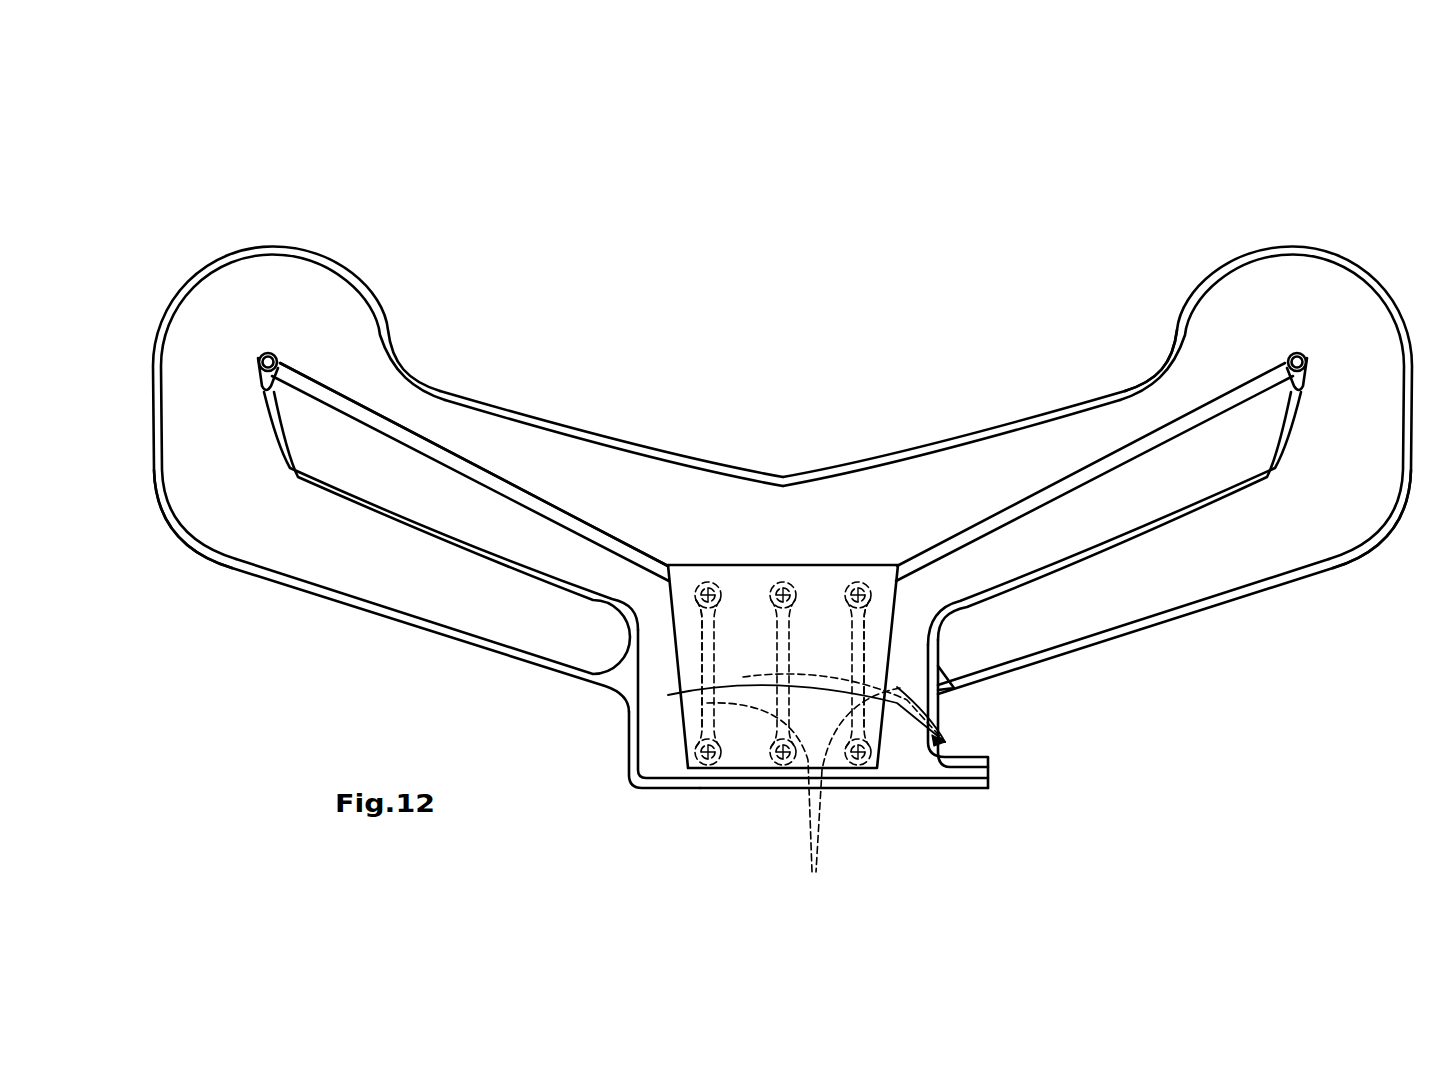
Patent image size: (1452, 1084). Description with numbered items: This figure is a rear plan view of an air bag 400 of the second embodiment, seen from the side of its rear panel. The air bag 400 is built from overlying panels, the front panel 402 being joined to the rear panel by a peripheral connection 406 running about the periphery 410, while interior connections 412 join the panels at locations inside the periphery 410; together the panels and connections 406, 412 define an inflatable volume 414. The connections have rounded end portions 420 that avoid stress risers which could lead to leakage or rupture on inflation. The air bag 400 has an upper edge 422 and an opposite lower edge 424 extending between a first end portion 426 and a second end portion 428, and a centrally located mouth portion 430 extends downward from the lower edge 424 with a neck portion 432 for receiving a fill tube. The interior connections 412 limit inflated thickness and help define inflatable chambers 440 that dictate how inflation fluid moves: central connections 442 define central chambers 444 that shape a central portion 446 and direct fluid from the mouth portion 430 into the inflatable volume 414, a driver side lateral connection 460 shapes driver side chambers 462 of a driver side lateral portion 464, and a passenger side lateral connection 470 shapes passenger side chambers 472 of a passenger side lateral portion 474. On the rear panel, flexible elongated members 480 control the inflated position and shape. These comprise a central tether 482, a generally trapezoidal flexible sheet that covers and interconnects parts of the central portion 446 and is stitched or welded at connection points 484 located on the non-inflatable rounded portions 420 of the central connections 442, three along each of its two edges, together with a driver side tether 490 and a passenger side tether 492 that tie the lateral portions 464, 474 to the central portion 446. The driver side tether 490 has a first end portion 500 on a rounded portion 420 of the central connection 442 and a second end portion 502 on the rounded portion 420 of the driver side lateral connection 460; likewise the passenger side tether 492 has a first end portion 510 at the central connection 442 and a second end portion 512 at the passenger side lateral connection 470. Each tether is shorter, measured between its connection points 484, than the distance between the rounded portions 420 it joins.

The air bag 400 is at (1384, 232).
The front panel 402 is at (1333, 470).
The peripheral connection 406 is at (1075, 402).
The periphery 410 is at (935, 448).
The interior connections 412 is at (782, 649).
The inflatable volume 414 is at (550, 618).
The end portions 420 is at (264, 352).
The upper edge 422 is at (620, 447).
The lower edge 424 is at (603, 687).
The first end portion 426 is at (197, 386).
The second end portion 428 is at (1358, 360).
The mouth portion 430 is at (667, 767).
The neck portion 432 is at (962, 772).
The inflatable chambers 440 is at (782, 613).
The central connections 442 is at (803, 797).
The central chambers 444 is at (859, 666).
The central portion 446 is at (827, 647).
The driver side lateral connection 460 is at (413, 518).
The driver side chambers 462 is at (353, 458).
The driver side lateral portion 464 is at (484, 517).
The passenger side lateral connection 470 is at (1153, 520).
The passenger side chambers 472 is at (1187, 458).
The passenger side lateral portion 474 is at (1172, 412).
The flexible elongated members 480 is at (782, 576).
The central tether 482 is at (685, 717).
The connection points 484 is at (276, 360).
The driver side tether 490 is at (530, 507).
The passenger side tether 492 is at (1052, 500).
The first end portion 500 is at (683, 583).
The second end portion 502 is at (292, 374).
The first end portion 510 is at (883, 573).
The second end portion 512 is at (1272, 378).